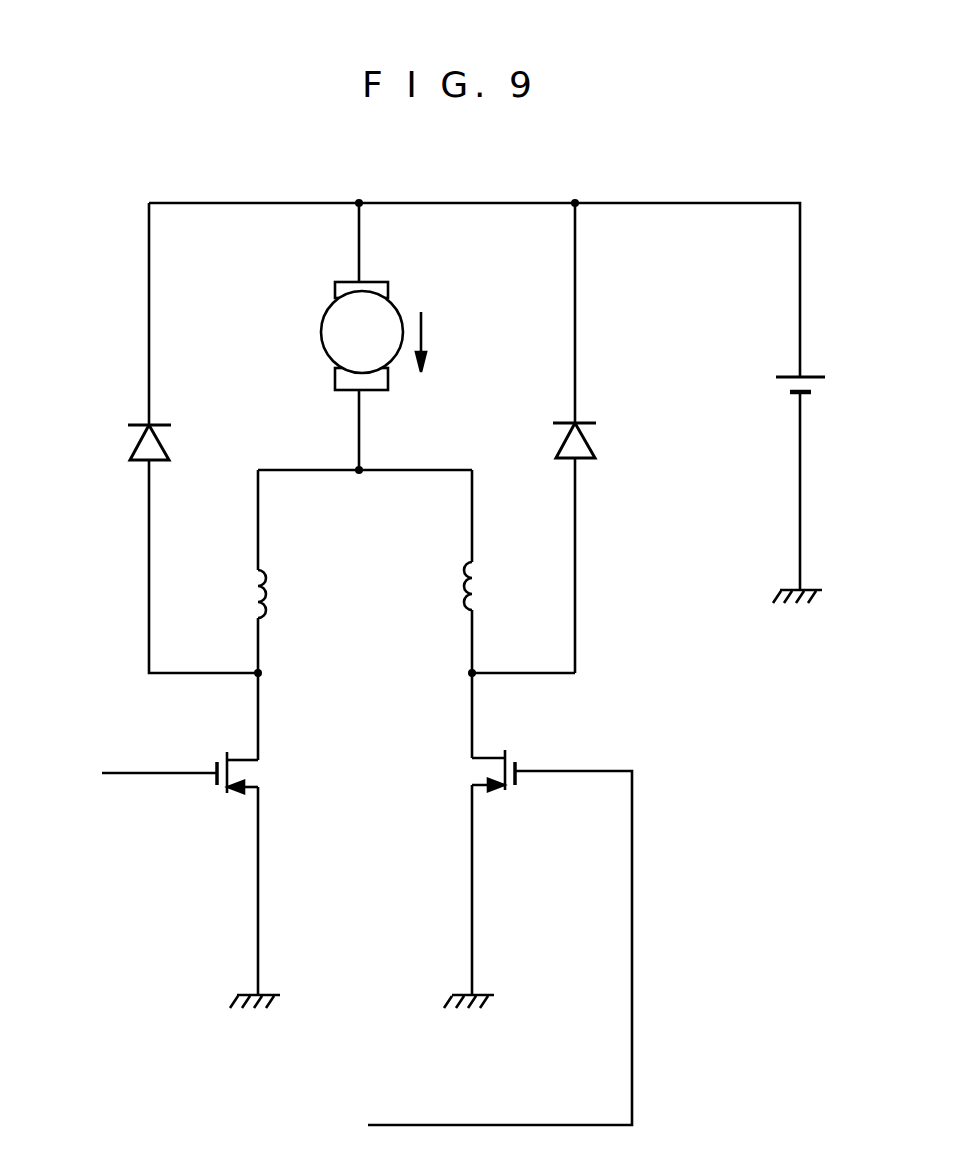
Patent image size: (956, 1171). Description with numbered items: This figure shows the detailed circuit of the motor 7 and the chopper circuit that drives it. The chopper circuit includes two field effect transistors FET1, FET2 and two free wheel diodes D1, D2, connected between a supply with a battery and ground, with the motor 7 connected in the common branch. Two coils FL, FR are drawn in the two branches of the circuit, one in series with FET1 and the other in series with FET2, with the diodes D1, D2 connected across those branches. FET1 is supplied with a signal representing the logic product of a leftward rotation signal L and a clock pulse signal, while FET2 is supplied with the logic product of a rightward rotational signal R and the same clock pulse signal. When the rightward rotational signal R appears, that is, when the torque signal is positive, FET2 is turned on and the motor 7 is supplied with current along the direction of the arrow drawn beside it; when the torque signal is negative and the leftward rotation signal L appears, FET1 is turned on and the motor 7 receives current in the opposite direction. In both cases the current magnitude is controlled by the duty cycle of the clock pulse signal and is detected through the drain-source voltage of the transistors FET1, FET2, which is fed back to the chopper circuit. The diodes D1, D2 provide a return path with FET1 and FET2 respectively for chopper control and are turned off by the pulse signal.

The motor 7 is at (395, 303).
The free wheel diode D1 is at (137, 445).
The free wheel diode D2 is at (588, 445).
The left field coil FL is at (234, 586).
The right field coil FR is at (495, 582).
The field effect transistor FET1 is at (282, 772).
The field effect transistor FET2 is at (450, 770).
The leftward rotation signal L is at (146, 770).
The rightward rotational signal R is at (482, 957).